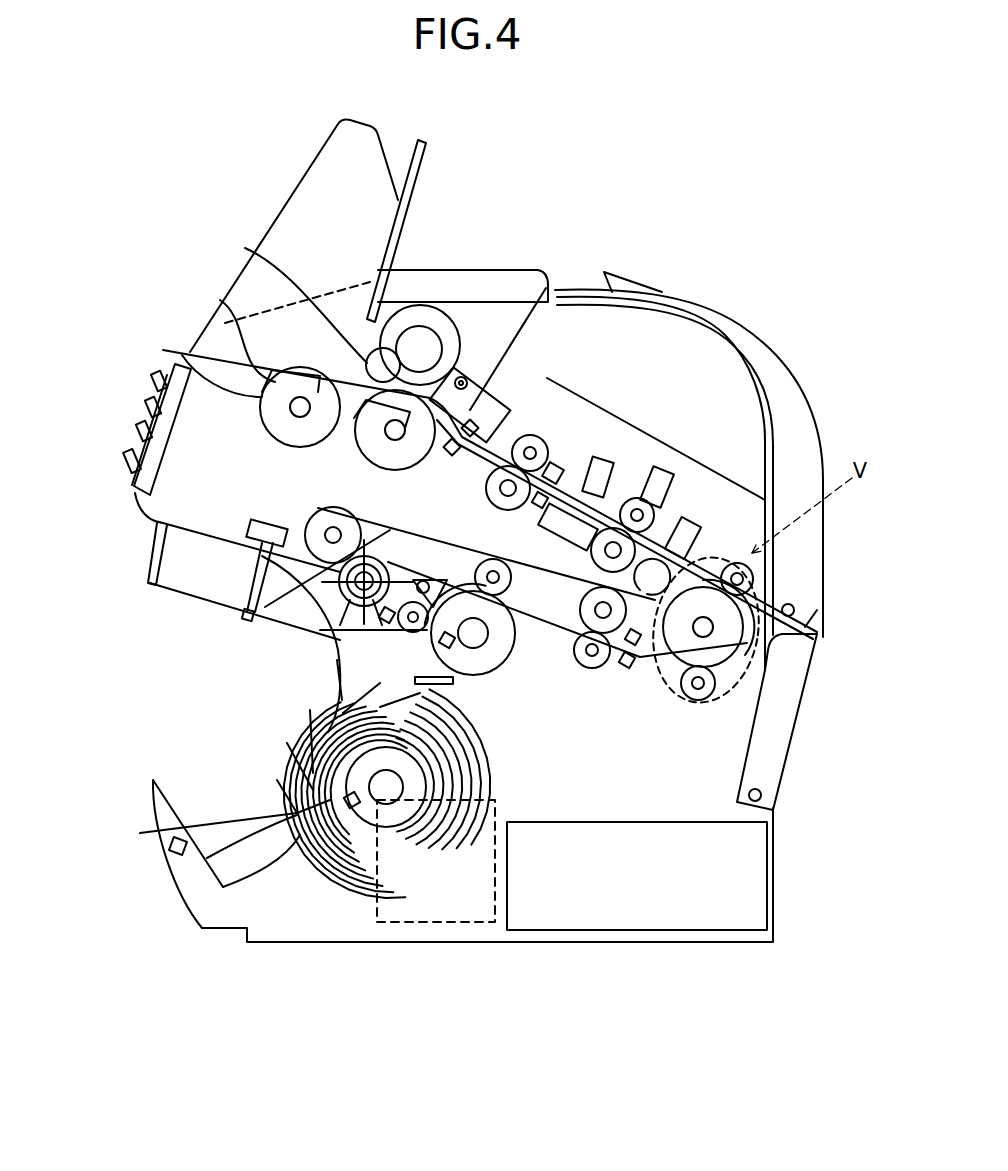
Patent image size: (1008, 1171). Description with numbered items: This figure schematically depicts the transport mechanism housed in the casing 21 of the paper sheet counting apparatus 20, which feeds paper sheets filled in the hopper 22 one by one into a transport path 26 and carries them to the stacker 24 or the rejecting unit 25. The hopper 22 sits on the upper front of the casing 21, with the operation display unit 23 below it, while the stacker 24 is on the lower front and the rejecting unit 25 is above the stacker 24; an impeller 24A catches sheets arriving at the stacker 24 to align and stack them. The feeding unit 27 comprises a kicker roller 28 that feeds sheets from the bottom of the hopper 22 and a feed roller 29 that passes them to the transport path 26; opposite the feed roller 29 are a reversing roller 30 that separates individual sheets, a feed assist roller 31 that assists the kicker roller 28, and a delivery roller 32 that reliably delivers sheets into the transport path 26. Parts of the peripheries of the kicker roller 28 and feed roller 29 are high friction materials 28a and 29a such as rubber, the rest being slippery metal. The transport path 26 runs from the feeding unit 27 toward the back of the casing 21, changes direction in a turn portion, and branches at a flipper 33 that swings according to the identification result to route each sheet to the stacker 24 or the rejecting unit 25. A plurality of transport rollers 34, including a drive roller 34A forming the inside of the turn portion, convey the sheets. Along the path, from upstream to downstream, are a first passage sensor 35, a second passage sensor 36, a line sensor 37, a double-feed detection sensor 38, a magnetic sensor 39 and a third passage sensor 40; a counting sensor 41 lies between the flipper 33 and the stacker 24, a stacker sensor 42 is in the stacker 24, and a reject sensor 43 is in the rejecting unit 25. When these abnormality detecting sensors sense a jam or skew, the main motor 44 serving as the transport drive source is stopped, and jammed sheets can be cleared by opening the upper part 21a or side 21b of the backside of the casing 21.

The paper sheet counting apparatus 20 is at (646, 213).
The casing 21 is at (776, 832).
The upper part of the backside of the casing 21a is at (766, 352).
The side of the backside of the casing 21b is at (779, 741).
The hopper 22 is at (276, 211).
The operation display unit 23 is at (143, 428).
The stacker 24 is at (240, 818).
The impeller 24A is at (304, 728).
The rejecting unit 25 is at (150, 553).
The transport path 26 is at (558, 627).
The feeding unit 27 is at (332, 452).
The kicker roller 28 is at (282, 392).
The high friction material 28a is at (269, 332).
The feed roller 29 is at (380, 460).
The high friction material 29a is at (425, 455).
The reversing roller 30 is at (406, 318).
The feed assist roller 31 is at (380, 297).
The delivery roller 32 is at (440, 392).
The flipper 33 is at (440, 577).
The transport rollers 34 is at (585, 608).
The drive roller 34A is at (748, 652).
The first passage sensor 35 is at (547, 378).
The second passage sensor 36 is at (554, 462).
The line sensor 37 is at (598, 460).
The double-feed detection sensor 38 is at (657, 465).
The magnetic sensor 39 is at (692, 547).
The third passage sensor 40 is at (623, 663).
The counting sensor 41 is at (360, 633).
The stacker sensor 42 is at (140, 833).
The reject sensor 43 is at (246, 615).
The main motor 44 is at (413, 930).